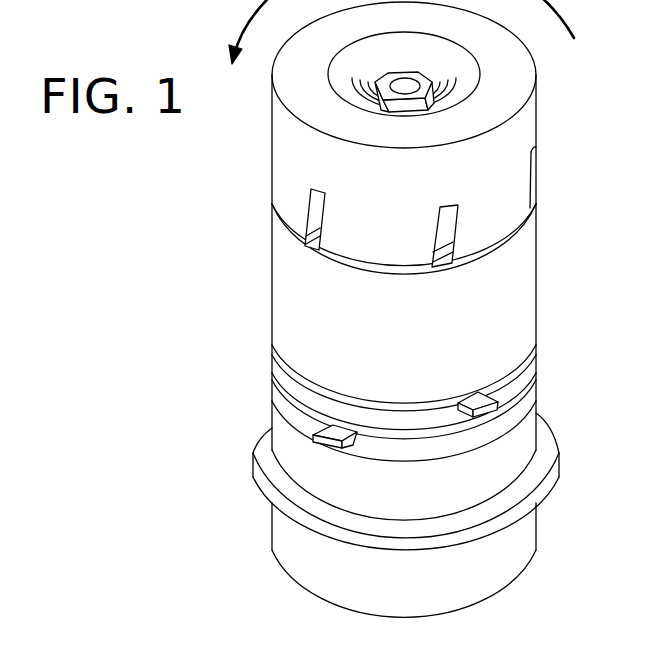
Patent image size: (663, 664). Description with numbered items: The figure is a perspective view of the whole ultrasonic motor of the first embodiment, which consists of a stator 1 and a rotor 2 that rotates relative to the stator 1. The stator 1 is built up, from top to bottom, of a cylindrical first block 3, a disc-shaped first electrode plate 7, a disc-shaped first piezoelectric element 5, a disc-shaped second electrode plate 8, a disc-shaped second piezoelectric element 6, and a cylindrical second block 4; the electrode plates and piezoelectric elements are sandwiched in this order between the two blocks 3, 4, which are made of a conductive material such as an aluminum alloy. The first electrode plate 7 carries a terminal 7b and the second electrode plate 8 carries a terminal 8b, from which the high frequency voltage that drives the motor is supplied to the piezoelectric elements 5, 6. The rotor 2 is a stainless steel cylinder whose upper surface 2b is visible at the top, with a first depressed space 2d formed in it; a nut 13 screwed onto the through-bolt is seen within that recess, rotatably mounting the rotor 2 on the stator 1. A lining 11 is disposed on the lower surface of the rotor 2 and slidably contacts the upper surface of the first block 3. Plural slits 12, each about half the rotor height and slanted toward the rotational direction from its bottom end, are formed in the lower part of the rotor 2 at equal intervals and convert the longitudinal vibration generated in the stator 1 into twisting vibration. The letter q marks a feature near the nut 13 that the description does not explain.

The stator 1 is at (588, 253).
The rotor 2 is at (437, 105).
The upper surface 2b is at (527, 64).
The first depressed space 2d is at (460, 55).
The first block 3 is at (533, 273).
The second block 4 is at (532, 436).
The first piezoelectric element 5 is at (536, 356).
The second piezoelectric element 6 is at (534, 403).
The first electrode plate 7 is at (540, 345).
The terminal 7b is at (478, 397).
The second electrode plate 8 is at (534, 379).
The terminal 8b is at (335, 428).
The lining 11 is at (383, 266).
The slits 12 is at (320, 205).
The nut 13 is at (390, 77).
The gap q is at (402, 90).